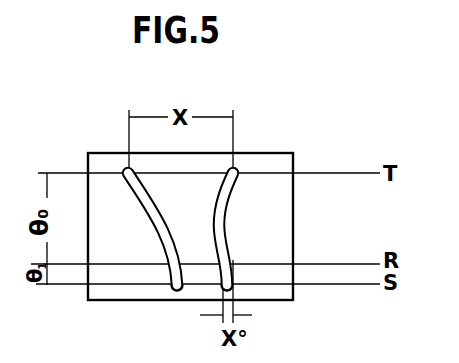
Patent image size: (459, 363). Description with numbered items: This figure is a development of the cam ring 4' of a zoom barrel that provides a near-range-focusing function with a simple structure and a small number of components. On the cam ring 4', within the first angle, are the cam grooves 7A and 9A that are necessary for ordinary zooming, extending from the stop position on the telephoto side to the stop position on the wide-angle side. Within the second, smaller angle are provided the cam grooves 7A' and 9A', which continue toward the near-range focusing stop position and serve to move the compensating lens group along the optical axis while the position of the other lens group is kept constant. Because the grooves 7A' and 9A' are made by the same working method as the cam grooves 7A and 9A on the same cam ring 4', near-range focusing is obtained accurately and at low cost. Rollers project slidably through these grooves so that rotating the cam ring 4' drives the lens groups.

The cam ring 4' is at (188, 249).
The cam groove 7A is at (147, 229).
The cam groove 9A is at (246, 229).
The cam groove 7A' is at (152, 307).
The cam groove 9A' is at (256, 307).